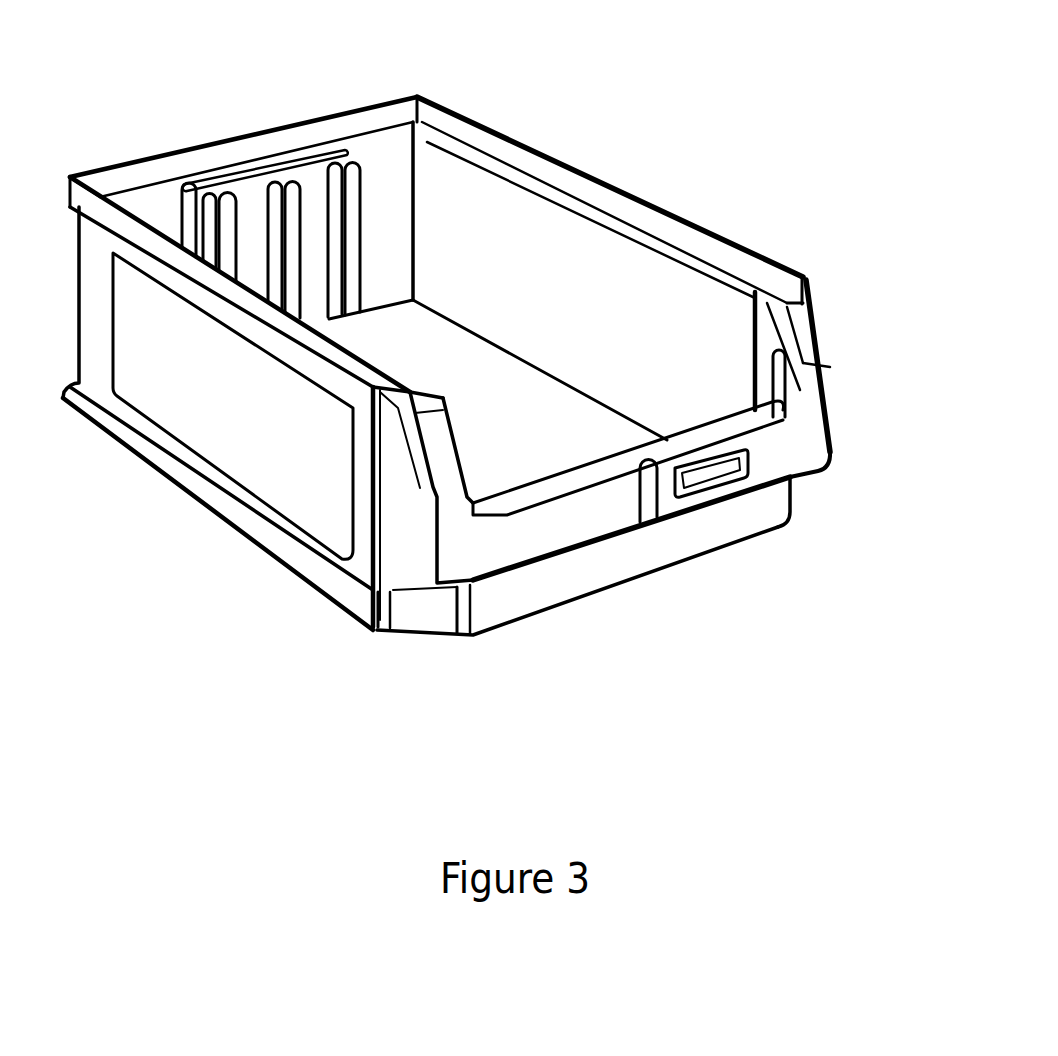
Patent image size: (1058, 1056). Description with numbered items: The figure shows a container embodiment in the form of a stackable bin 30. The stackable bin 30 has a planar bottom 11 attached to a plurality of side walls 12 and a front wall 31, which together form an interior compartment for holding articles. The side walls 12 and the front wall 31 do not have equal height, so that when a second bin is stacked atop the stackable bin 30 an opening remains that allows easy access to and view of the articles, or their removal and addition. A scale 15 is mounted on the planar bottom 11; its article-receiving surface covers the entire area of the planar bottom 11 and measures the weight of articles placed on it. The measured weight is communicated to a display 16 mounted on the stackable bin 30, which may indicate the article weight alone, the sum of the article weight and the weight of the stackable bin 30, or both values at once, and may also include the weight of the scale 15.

The stackable bin 30 is at (795, 213).
The side walls 12 is at (525, 250).
The planar bottom 11 is at (490, 405).
The scale 15 is at (557, 452).
The display 16 is at (700, 472).
The front wall 31 is at (593, 557).